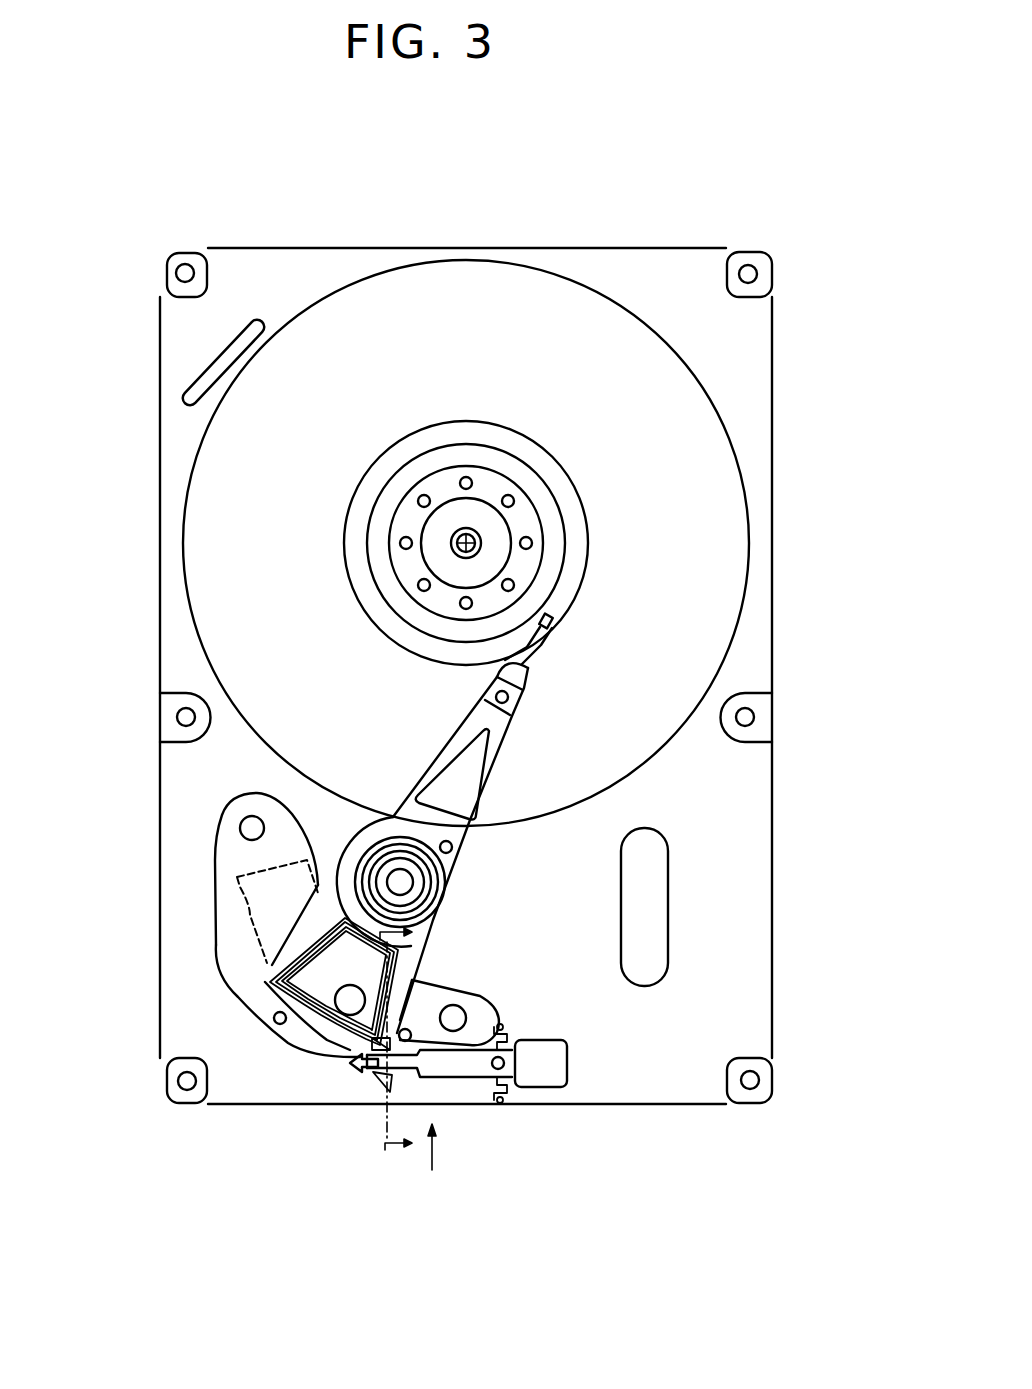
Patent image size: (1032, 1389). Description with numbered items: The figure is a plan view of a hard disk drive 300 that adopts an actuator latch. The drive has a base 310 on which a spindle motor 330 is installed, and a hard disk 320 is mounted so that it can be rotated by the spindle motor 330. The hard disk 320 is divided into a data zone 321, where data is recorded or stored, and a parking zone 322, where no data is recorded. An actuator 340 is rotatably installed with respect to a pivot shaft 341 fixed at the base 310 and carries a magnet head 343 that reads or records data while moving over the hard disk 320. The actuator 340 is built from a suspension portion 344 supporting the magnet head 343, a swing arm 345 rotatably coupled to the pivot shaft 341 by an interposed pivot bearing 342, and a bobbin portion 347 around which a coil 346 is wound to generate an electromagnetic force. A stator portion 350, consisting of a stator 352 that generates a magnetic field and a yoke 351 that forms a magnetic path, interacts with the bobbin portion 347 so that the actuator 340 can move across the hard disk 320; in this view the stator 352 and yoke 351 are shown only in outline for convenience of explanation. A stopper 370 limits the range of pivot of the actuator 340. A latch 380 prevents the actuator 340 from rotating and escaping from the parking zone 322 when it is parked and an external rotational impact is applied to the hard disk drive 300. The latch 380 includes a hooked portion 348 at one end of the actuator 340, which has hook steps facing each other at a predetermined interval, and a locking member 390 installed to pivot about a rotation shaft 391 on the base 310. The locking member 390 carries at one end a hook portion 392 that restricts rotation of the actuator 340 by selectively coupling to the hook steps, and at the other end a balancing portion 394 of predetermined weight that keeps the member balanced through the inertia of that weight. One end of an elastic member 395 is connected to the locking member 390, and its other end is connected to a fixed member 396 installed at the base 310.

The hard disk drive 300 is at (745, 208).
The base 310 is at (745, 1000).
The hard disk 320 is at (712, 408).
The data zone 321 is at (737, 516).
The parking zone 322 is at (519, 440).
The spindle motor 330 is at (452, 512).
The actuator 340 is at (420, 728).
The pivot shaft 341 is at (412, 880).
The pivot bearing 342 is at (383, 903).
The magnet head 343 is at (556, 622).
The suspension portion 344 is at (545, 650).
The swing arm 345 is at (493, 755).
The coil 346 is at (267, 982).
The bobbin portion 347 is at (265, 1003).
The hooked portion 348 is at (372, 1106).
The stator portion 350 is at (207, 813).
The yoke 351 is at (222, 850).
The stator 352 is at (258, 906).
The stopper 370 is at (422, 1000).
The latch 380 is at (483, 1218).
The locking member 390 is at (577, 1103).
The rotation shaft 391 is at (505, 1068).
The hook portion 392 is at (352, 1074).
The balancing portion 394 is at (552, 1042).
The elastic member 395 is at (492, 1082).
The fixed member 396 is at (497, 1106).